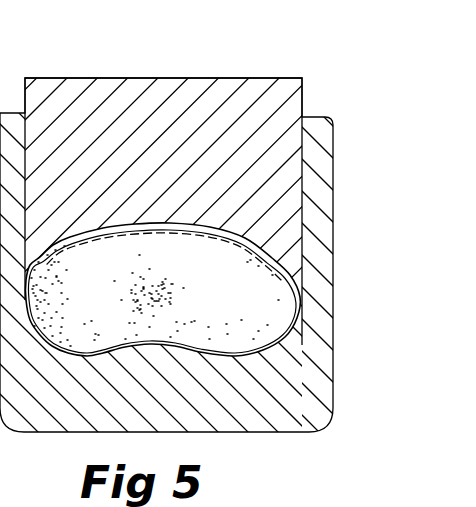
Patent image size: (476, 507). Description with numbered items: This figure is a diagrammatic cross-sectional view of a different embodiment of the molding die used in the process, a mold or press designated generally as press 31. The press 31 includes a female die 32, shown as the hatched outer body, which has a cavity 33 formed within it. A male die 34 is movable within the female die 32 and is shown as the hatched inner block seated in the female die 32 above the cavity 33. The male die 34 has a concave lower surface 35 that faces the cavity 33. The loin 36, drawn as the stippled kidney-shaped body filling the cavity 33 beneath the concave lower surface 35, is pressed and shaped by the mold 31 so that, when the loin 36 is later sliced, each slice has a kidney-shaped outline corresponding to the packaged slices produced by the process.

The mold or press 31 is at (238, 253).
The female die 32 is at (336, 144).
The cavity 33 is at (258, 249).
The male die 34 is at (171, 77).
The concave lower surface 35 is at (242, 237).
The loin 36 is at (314, 295).